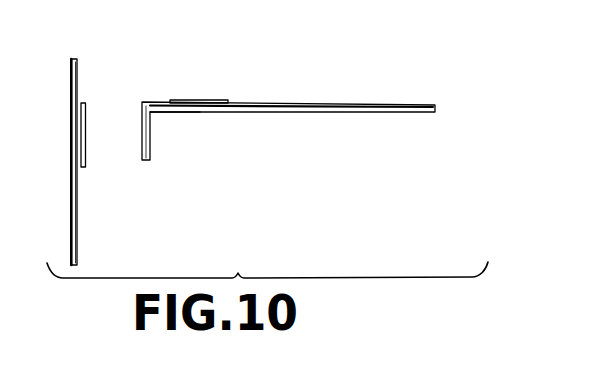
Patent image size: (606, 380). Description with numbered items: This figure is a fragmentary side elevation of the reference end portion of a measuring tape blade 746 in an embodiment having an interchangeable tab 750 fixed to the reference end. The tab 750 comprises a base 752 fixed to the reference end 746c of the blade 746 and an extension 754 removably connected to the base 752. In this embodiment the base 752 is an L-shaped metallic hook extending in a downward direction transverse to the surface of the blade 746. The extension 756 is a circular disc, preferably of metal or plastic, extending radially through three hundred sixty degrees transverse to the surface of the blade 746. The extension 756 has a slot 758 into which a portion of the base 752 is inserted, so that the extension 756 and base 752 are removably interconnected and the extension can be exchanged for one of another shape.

The blade 746 is at (352, 105).
The reference end 746c is at (155, 112).
The tab 750 is at (137, 137).
The base 752 is at (187, 101).
The extension 754 is at (87, 61).
The extension 756 is at (72, 193).
The slot 758 is at (86, 138).